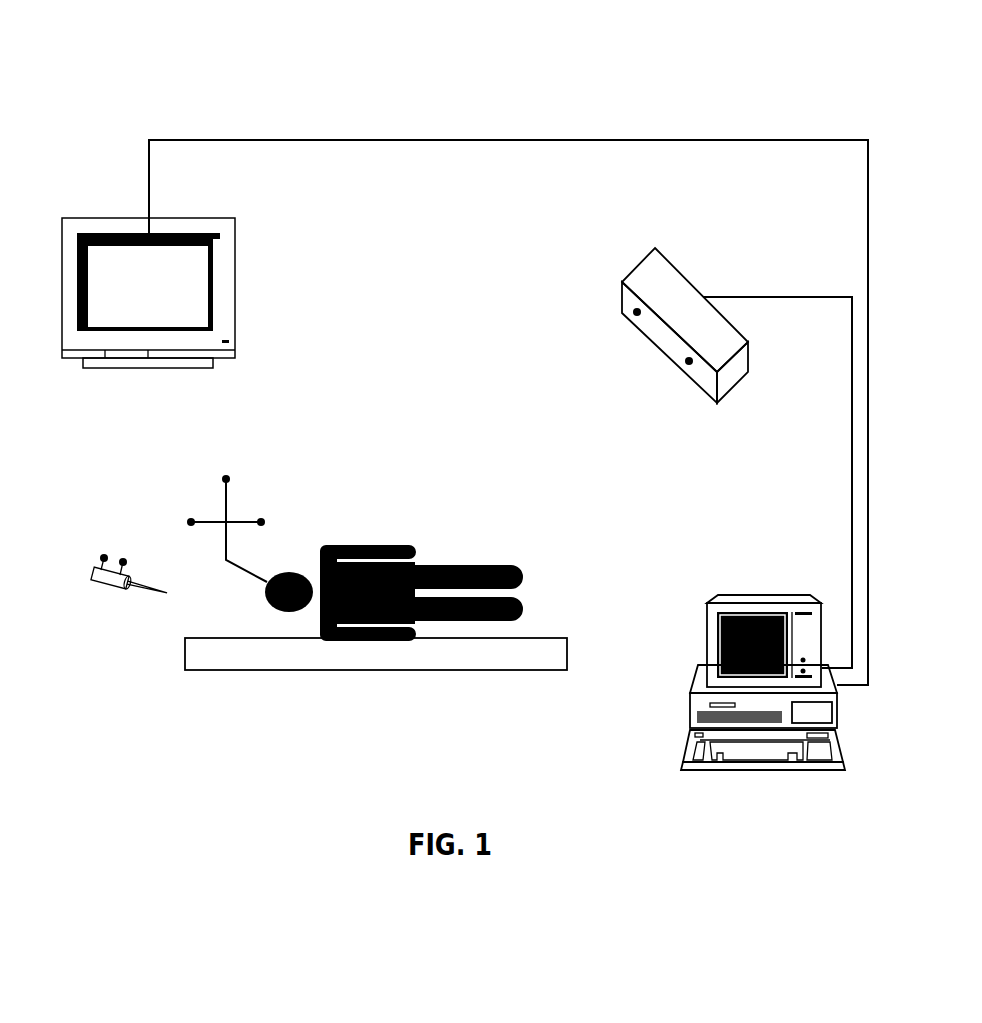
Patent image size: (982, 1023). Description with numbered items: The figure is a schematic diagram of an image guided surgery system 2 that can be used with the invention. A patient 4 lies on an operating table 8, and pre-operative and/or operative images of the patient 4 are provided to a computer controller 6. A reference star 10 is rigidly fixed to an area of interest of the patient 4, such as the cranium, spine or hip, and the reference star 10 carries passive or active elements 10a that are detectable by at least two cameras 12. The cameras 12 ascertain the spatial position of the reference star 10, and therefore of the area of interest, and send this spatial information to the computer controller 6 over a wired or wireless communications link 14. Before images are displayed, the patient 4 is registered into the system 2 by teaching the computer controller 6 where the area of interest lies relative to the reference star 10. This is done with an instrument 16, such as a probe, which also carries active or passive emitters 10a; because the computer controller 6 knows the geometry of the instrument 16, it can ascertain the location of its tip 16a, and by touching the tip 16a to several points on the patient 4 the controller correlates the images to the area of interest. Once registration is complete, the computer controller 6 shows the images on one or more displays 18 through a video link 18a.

The image guided surgery system 2 is at (247, 40).
The patient 4 is at (377, 545).
The computer controller 6 is at (690, 685).
The operating table 8 is at (185, 657).
The reference star 10 is at (227, 502).
The passive or active elements 10a is at (162, 521).
The cameras 12 is at (633, 312).
The communications link 14 is at (753, 293).
The instrument 16 is at (90, 575).
The tip 16a is at (147, 587).
The displays 18 is at (237, 248).
The video link 18a is at (862, 233).